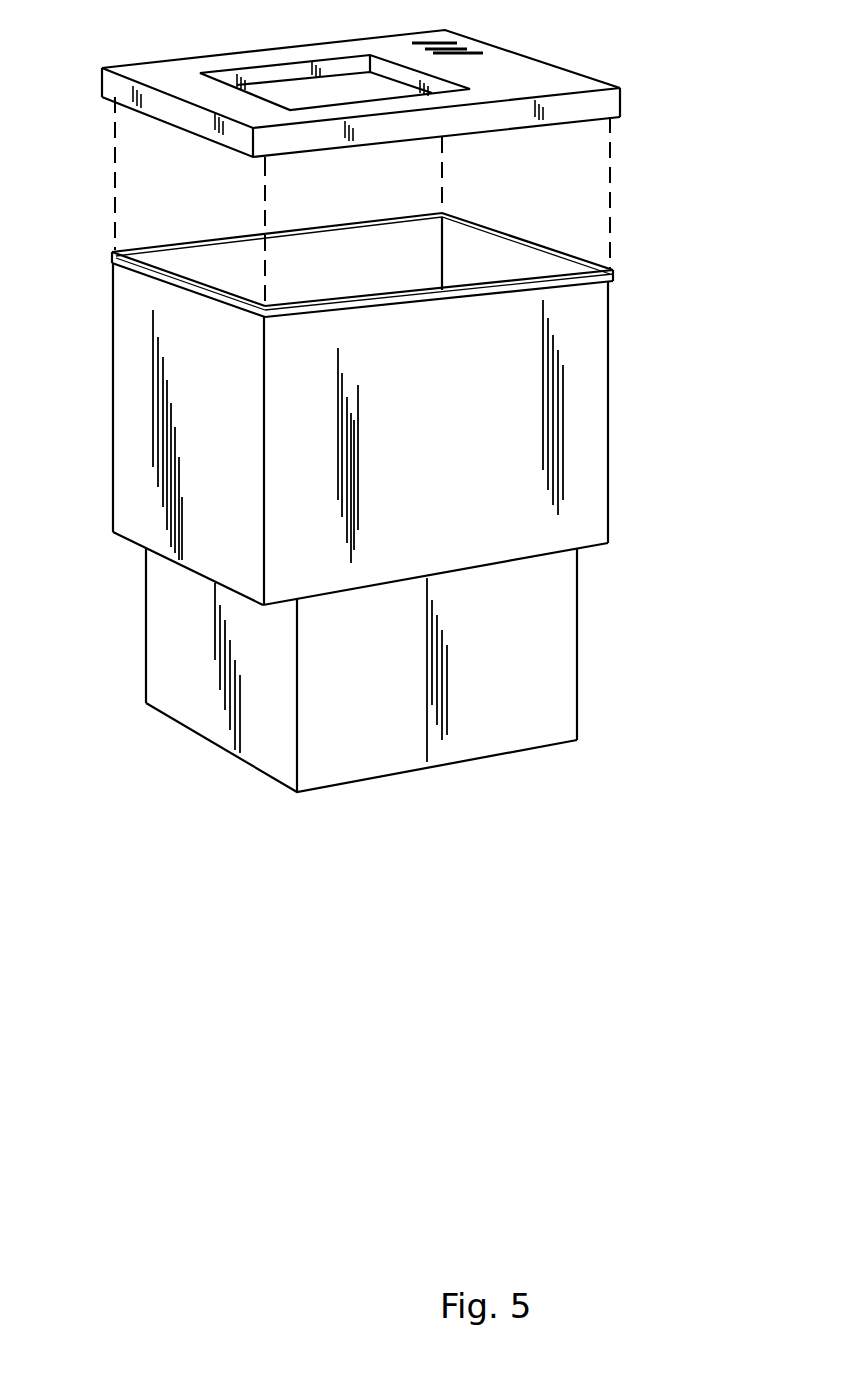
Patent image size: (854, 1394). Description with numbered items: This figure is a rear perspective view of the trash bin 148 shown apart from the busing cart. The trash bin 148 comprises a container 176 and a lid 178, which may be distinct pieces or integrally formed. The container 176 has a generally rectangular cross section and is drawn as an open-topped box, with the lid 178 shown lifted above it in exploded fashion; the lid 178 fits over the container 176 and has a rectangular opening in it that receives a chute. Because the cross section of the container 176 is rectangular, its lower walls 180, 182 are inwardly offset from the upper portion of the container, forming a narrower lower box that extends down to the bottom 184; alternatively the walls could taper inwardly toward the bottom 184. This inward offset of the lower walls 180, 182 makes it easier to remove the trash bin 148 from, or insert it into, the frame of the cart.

The trash bin 148 is at (448, 199).
The container 176 is at (133, 442).
The lid 178 is at (547, 75).
The lower wall 180 is at (577, 628).
The lower wall 182 is at (610, 474).
The bottom 184 is at (515, 753).